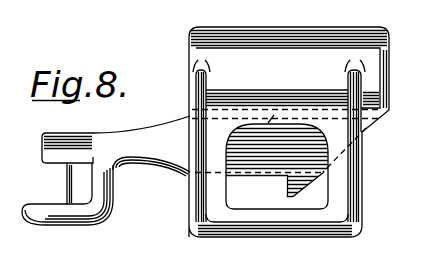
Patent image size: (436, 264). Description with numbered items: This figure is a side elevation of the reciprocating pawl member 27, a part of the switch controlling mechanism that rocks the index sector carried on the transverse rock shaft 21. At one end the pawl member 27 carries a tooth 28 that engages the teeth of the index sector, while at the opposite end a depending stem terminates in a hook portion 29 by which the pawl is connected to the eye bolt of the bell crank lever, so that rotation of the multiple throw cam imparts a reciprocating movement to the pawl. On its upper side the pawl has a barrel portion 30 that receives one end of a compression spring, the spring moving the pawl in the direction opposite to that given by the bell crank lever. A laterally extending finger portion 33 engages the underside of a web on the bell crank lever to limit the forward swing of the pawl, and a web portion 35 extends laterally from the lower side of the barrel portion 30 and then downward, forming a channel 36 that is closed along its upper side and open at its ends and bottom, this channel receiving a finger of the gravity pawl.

The rock shaft 21 is at (21, 4).
The reciprocating pawl member 27 is at (186, 114).
The tooth 28 is at (287, 192).
The hook portion 29 is at (73, 212).
The barrel portion 30 is at (273, 30).
The finger portion 33 is at (55, 157).
The web portion 35 is at (360, 149).
The channel 36 is at (228, 145).